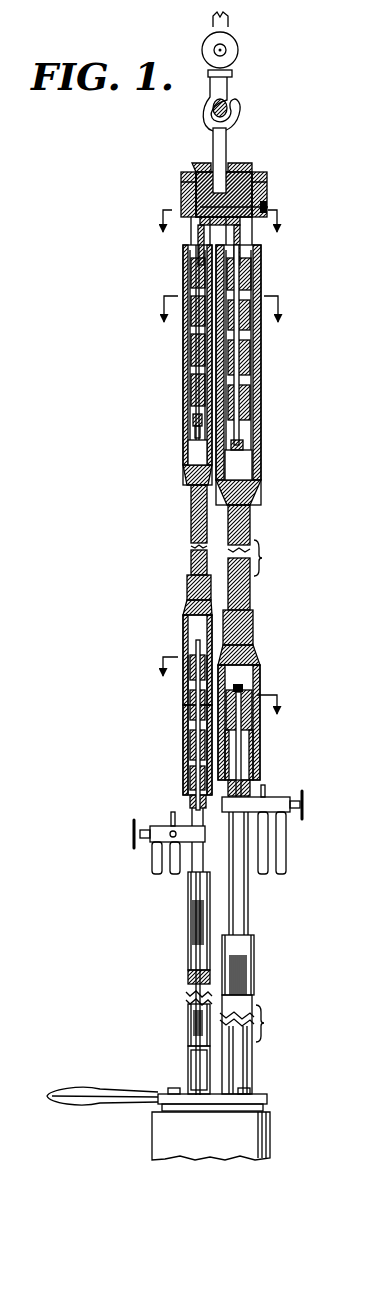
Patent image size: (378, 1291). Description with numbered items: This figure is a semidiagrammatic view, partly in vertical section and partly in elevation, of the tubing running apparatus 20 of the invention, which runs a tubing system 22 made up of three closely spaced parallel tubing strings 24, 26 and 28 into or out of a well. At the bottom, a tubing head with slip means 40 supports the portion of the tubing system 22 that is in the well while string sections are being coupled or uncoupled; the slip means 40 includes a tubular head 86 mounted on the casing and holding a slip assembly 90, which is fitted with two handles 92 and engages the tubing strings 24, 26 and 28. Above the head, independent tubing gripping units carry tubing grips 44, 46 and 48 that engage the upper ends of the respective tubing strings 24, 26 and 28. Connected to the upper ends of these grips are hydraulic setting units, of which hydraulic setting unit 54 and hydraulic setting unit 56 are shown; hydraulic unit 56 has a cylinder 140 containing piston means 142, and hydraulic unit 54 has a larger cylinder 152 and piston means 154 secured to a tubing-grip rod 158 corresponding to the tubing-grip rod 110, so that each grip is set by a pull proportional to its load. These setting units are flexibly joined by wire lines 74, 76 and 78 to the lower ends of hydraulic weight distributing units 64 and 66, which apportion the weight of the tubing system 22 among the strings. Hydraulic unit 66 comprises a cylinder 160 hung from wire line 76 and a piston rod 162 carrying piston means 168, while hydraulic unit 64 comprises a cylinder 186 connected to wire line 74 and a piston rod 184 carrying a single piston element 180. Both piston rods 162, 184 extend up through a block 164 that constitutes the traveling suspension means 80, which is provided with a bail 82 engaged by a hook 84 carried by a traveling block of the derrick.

The tubing running apparatus 20 is at (304, 178).
The tubing system 22 is at (257, 991).
The tubing string 24 is at (242, 1053).
The tubing string 26 is at (189, 986).
The tubing string 28 is at (192, 1064).
The slip means 40 is at (157, 1146).
The tubing grip 44 is at (241, 969).
The tubing grip 46 is at (195, 926).
The tubing grip 48 is at (196, 1016).
The hydraulic setting unit 54 is at (263, 673).
The hydraulic setting unit 56 is at (184, 691).
The hydraulic weight distributing unit 64 is at (262, 386).
The hydraulic weight distributing unit 66 is at (185, 392).
The wire line 74 is at (240, 579).
The wire line 76 is at (197, 563).
The wire line 78 is at (196, 528).
The traveling suspension means 80 is at (263, 167).
The bail 82 is at (222, 144).
The hook 84 is at (205, 118).
The tubular head 86 is at (283, 1126).
The slip assembly 90 is at (263, 1096).
The handle 92 is at (127, 1100).
The tubing-grip rod 110 is at (190, 867).
The cylinder 140 is at (186, 757).
The piston means 142 is at (190, 723).
The cylinder 152 is at (262, 729).
The piston means 154 is at (256, 711).
The tubing-grip rod 158 is at (240, 788).
The cylinder 160 is at (189, 349).
The piston rod 162 is at (195, 231).
The block 164 is at (265, 192).
The piston means 168 is at (196, 421).
The piston element 180 is at (250, 421).
The piston rod 184 is at (251, 240).
The cylinder 186 is at (262, 351).